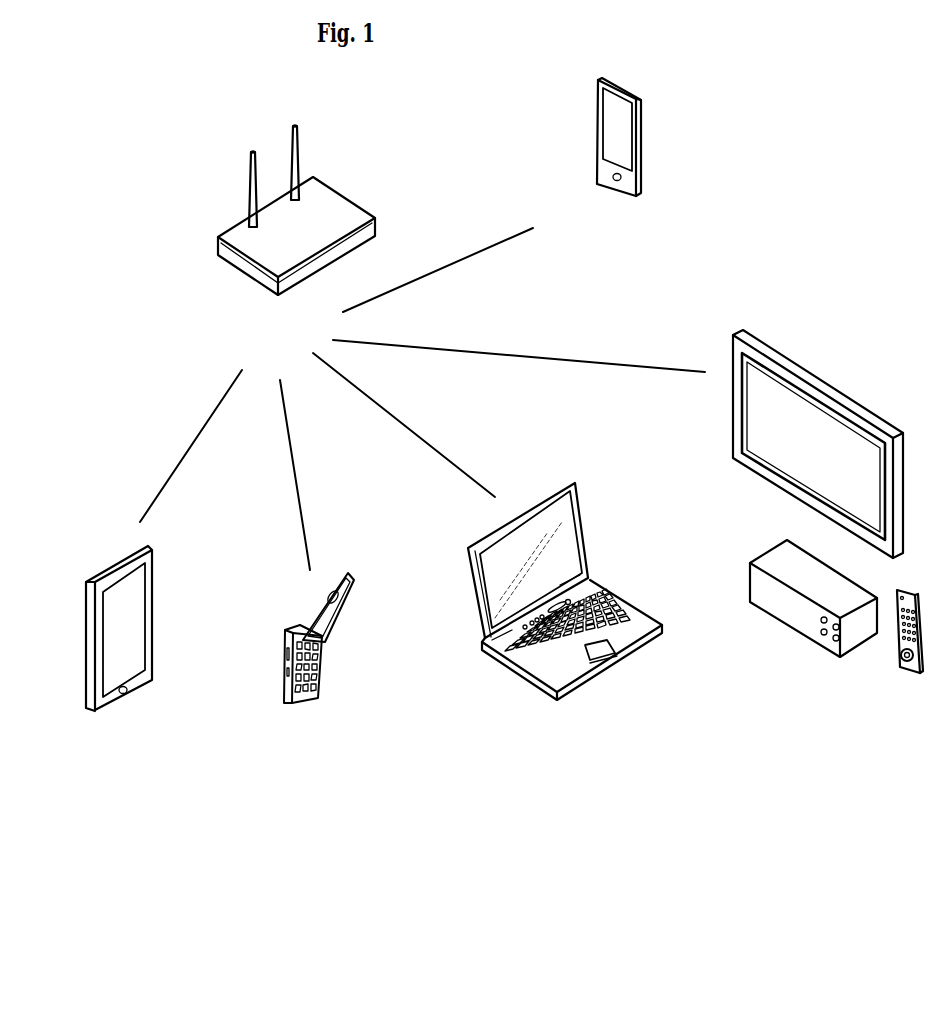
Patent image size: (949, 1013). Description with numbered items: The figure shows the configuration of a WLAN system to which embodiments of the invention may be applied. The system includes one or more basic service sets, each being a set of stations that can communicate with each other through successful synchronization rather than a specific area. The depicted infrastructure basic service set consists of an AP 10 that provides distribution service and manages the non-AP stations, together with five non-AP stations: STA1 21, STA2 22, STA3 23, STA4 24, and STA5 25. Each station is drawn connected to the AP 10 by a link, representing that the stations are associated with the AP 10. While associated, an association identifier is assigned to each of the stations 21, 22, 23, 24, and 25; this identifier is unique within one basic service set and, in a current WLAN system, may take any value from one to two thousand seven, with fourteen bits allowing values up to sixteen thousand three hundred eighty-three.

The AP 10 is at (296, 245).
The STA1 21 is at (115, 665).
The STA2 22 is at (316, 679).
The STA3 23 is at (565, 625).
The STA4 24 is at (828, 528).
The STA5 25 is at (615, 171).